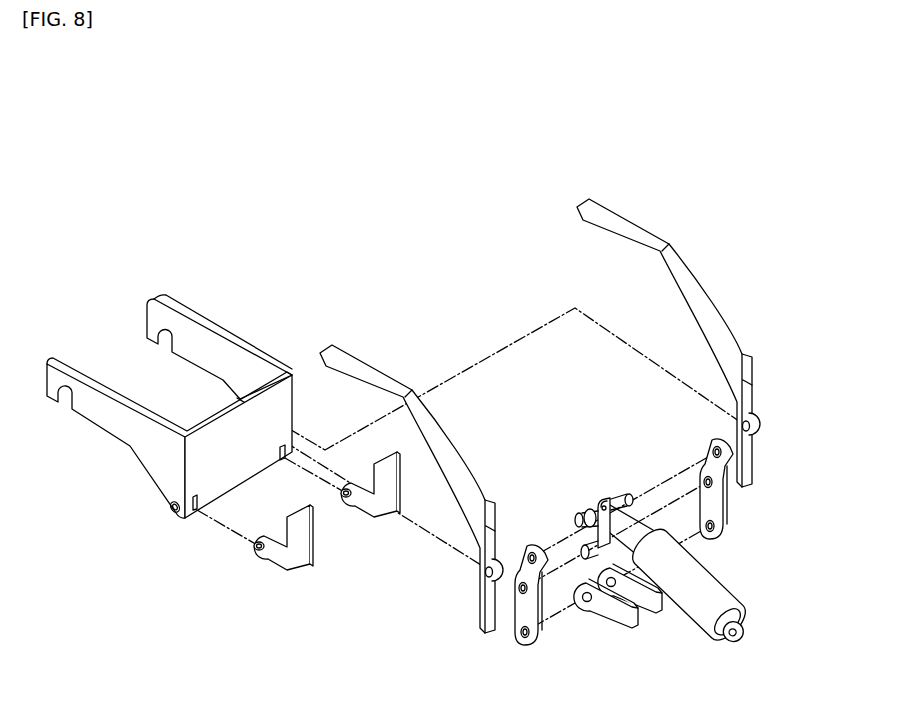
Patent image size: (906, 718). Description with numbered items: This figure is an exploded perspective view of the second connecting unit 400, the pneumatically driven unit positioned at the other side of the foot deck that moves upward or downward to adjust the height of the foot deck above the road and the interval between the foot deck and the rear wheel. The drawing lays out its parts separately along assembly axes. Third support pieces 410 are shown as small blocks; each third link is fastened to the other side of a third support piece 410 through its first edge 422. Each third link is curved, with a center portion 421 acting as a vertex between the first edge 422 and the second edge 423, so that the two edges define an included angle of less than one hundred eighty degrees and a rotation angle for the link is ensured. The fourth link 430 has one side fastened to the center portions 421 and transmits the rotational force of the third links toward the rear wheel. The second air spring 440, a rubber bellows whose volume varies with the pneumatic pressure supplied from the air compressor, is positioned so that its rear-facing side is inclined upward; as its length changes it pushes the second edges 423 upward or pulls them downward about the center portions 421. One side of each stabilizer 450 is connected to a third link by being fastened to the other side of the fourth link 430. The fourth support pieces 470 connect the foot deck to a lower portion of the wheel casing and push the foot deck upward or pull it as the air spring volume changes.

The second connecting unit 400 is at (520, 98).
The third support piece 410 is at (610, 618).
The center portion 421 is at (504, 590).
The first edge 422 is at (525, 646).
The second edge 423 is at (537, 545).
The fourth link 430 is at (590, 498).
The second air spring 440 is at (725, 591).
The stabilizer 450 is at (363, 365).
The fourth support piece 470 is at (273, 562).